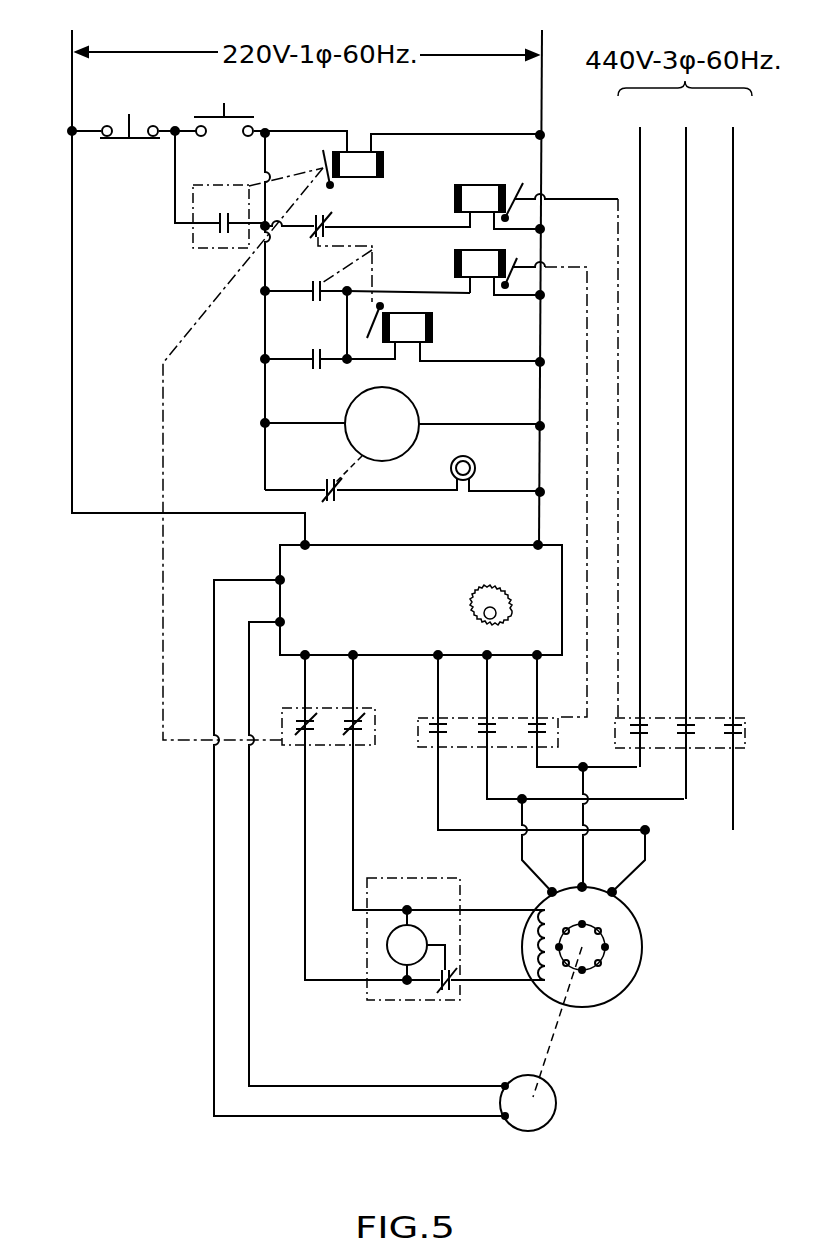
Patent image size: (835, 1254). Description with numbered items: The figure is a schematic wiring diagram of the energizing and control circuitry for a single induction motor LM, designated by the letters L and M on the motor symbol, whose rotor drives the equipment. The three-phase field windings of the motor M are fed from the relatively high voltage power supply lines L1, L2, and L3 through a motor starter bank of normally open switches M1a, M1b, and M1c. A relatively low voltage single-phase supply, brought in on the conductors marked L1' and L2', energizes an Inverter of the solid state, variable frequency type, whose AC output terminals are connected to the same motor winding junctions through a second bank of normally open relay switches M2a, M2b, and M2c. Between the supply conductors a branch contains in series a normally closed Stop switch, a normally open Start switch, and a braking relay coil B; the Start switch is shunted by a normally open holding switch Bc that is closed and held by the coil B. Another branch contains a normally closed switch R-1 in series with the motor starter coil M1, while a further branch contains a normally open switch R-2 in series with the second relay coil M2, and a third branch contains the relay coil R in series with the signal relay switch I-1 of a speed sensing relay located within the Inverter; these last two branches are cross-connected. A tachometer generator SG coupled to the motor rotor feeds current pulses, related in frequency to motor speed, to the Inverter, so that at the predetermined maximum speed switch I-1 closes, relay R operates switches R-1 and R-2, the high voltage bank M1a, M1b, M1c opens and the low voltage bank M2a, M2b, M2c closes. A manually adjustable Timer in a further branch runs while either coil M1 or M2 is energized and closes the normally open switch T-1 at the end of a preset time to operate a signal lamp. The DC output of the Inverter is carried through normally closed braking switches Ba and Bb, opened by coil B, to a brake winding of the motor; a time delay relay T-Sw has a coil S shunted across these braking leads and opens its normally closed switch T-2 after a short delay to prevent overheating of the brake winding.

The single-phase supply line L1' is at (181, 274).
The single-phase supply line L2' is at (544, 274).
The Stop switch Stop is at (130, 114).
The Start switch Start is at (224, 108).
The holding switch Bc is at (220, 189).
The relay coil B is at (273, 445).
The normally closed switch R-1 is at (345, 206).
The relay coil M1 is at (536, 450).
The second relay coil M2 is at (467, 483).
The normally open switch R-2 is at (307, 294).
The relay coil R is at (455, 334).
The signal relay switch I-1 is at (309, 360).
The element Timer is at (404, 424).
The normally open switch T-1 is at (325, 488).
The inverter Inverter is at (419, 600).
The normally closed relay switch Ba is at (300, 716).
The normally closed relay switch Bb is at (350, 716).
The normally open relay switch M2a is at (436, 720).
The normally open relay switch M2b is at (485, 720).
The normally open relay switch M2c is at (534, 720).
The power supply line L1 is at (637, 435).
The power supply line L2 is at (682, 451).
The power supply line L3 is at (728, 467).
The normally open switch M1a is at (641, 722).
The normally open switch M1b is at (687, 722).
The normally open switch M1c is at (733, 722).
The induction motor M is at (582, 945).
The induction motor L is at (488, 940).
The time delay relay switch T-Sw is at (413, 939).
The coil S is at (416, 945).
The normally closed switch T-2 is at (455, 976).
The tachometer generator SG is at (398, 855).